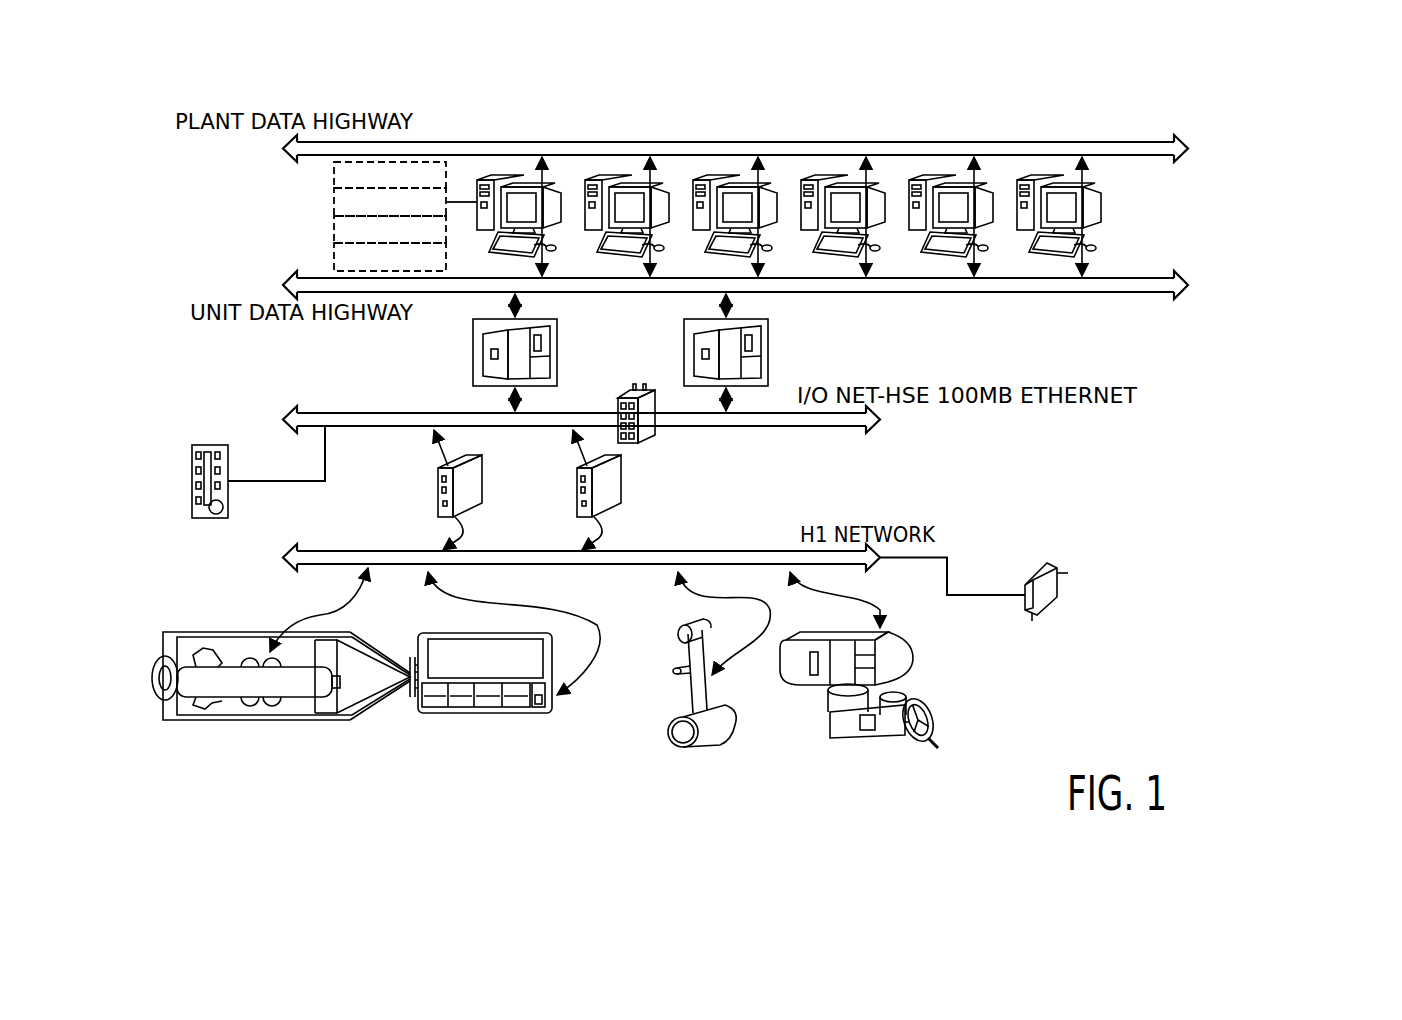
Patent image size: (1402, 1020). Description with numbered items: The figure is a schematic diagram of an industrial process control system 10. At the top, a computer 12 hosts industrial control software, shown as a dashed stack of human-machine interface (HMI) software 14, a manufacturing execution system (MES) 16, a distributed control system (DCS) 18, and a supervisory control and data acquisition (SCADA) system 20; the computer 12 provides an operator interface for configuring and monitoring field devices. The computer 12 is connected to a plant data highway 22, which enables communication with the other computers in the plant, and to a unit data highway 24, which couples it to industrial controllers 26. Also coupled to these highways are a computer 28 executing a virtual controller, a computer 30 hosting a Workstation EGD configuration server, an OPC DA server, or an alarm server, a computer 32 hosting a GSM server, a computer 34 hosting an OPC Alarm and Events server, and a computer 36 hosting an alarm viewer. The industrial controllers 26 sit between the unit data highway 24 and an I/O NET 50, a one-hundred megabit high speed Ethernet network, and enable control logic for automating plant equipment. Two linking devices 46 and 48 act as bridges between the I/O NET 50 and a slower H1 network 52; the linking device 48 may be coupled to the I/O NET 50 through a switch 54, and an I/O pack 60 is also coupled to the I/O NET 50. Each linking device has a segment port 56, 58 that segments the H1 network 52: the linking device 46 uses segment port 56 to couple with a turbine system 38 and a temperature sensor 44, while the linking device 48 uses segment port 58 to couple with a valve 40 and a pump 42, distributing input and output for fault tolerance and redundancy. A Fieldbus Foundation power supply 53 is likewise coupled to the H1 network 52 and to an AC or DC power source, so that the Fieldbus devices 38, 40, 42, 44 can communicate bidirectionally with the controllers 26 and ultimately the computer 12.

The industrial process control system 10 is at (1315, 146).
The computer 12 is at (490, 179).
The human-machine interface (HMI) software 14 is at (334, 178).
The manufacturing execution system (MES) 16 is at (334, 206).
The distributed control system (DCS) 18 is at (334, 233).
The supervisory control and data acquisition (SCADA) system 20 is at (334, 261).
The plant data highway 22 is at (1180, 143).
The unit data highway 24 is at (1180, 281).
The industrial controller 26 is at (557, 352).
The computer 28 is at (598, 179).
The computer 30 is at (706, 179).
The computer 32 is at (814, 179).
The computer 34 is at (922, 179).
The computer 36 is at (1030, 179).
The turbine system 38 is at (310, 725).
The valve 40 is at (712, 737).
The pump 42 is at (935, 732).
The temperature sensor 44 is at (513, 714).
The linking device 46 is at (478, 484).
The linking device 48 is at (617, 484).
The I/O NET 50 is at (880, 422).
The H1 network 52 is at (880, 562).
The Fieldbus Foundation power supply 53 is at (1036, 573).
The switch 54 is at (645, 440).
The segment port 56 is at (434, 519).
The segment port 58 is at (573, 519).
The I/O pack 60 is at (208, 445).